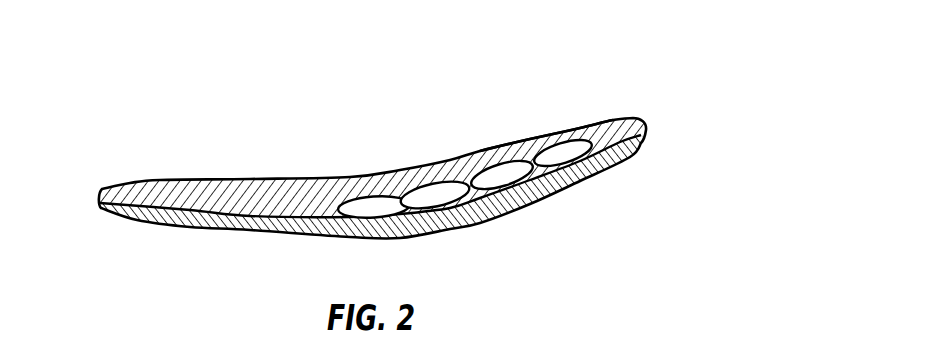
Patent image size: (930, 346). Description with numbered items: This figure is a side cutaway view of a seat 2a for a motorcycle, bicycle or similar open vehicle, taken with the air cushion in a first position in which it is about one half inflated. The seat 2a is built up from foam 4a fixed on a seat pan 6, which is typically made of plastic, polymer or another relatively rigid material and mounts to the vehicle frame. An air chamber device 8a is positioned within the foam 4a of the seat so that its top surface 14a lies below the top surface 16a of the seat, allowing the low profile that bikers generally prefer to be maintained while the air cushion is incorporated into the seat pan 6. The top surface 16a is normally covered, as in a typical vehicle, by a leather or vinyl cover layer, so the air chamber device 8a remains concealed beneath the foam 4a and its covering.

The seat 2a is at (645, 132).
The foam 4a is at (182, 176).
The seat pan 6 is at (124, 221).
The air chamber device 8a is at (553, 137).
The top surface of air chamber device 14a is at (442, 183).
The top surface of the seat 16a is at (218, 184).